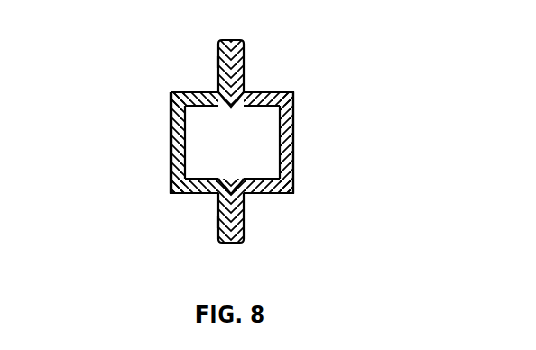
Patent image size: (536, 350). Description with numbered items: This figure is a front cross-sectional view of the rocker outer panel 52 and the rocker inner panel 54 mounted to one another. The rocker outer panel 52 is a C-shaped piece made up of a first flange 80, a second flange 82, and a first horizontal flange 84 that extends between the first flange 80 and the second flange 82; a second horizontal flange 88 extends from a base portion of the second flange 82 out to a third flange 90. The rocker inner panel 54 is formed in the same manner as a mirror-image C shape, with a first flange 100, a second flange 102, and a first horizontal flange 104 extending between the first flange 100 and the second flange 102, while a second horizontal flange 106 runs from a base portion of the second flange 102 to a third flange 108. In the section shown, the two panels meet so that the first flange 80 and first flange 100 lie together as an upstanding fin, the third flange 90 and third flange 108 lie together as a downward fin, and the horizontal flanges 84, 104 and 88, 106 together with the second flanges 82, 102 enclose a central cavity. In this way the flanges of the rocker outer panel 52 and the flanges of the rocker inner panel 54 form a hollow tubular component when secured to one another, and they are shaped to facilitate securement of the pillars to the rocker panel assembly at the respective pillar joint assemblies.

The rocker outer panel 52 is at (299, 92).
The rocker inner panel 54 is at (165, 92).
The first flange 80 is at (245, 62).
The second flange 82 is at (293, 142).
The first horizontal flange 84 is at (265, 92).
The second horizontal flange 88 is at (268, 194).
The third flange 90 is at (244, 222).
The first flange 100 is at (218, 62).
The second flange 102 is at (171, 142).
The first horizontal flange 104 is at (195, 92).
The second horizontal flange 106 is at (196, 194).
The third flange 108 is at (219, 222).